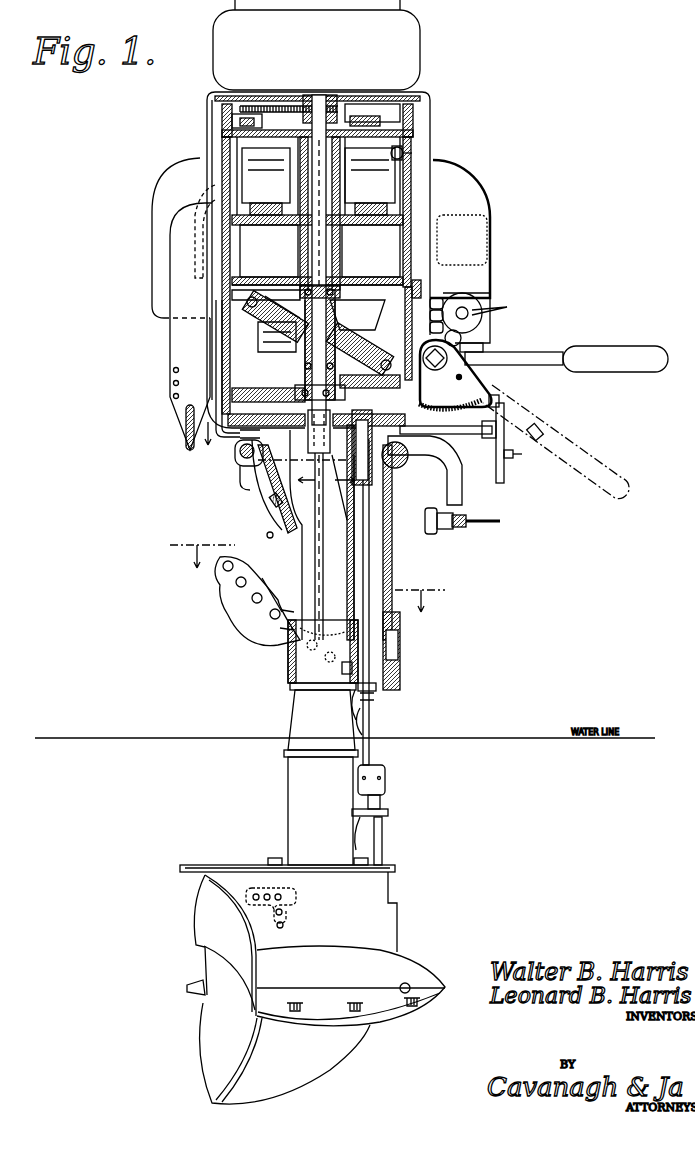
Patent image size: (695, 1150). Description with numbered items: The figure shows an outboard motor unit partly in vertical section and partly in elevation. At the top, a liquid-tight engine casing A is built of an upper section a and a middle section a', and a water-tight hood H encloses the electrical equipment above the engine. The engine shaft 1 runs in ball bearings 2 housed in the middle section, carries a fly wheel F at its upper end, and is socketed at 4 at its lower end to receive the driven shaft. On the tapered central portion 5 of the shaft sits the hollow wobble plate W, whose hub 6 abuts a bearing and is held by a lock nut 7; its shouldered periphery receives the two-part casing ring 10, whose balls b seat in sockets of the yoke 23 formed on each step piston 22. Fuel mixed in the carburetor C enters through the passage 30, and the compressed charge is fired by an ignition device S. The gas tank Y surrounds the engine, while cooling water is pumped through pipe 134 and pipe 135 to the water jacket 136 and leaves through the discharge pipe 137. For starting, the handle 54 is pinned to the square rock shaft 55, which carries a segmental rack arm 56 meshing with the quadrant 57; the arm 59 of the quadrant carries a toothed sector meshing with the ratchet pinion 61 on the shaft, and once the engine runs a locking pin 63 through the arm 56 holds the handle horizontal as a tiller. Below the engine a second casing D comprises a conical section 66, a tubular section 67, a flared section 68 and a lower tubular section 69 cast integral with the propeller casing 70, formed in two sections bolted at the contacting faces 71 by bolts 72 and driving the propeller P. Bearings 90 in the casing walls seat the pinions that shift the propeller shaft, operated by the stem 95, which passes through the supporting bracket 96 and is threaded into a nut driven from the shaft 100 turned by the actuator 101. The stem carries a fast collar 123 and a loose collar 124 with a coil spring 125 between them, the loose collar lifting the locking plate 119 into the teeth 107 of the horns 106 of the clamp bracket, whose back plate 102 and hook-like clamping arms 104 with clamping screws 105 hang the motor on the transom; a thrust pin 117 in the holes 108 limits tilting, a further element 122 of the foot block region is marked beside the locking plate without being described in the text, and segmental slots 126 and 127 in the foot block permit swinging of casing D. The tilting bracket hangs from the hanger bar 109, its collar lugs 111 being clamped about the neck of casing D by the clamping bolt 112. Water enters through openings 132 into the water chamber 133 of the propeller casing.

The water-tight hood H is at (405, 40).
The fly wheel F is at (380, 108).
The ignition device S is at (410, 153).
The water jacket 136 is at (296, 168).
The socket 4 is at (335, 167).
The upper section a is at (378, 181).
The discharge pipe 137 is at (214, 183).
The gas tank Y is at (470, 205).
The engine shaft 1 is at (320, 262).
The engine casing A is at (371, 251).
The middle section a' is at (329, 265).
The carburetor passage 30 is at (422, 290).
The carburetor C is at (472, 302).
The two-part casing ring 10 is at (275, 312).
The wobble plate W is at (282, 300).
The ball bearings 2 is at (335, 292).
The ball b is at (250, 335).
The step piston 22 is at (378, 305).
The locking pin 63 is at (480, 355).
The handle 54 is at (537, 352).
The lock nut 7 is at (514, 449).
The water pipe 135 is at (218, 346).
The yoke 23 is at (295, 342).
The ratchet pinion 61 is at (312, 398).
The quadrant arm 59 is at (375, 400).
The square rock shaft 55 is at (436, 364).
The quadrant 57 is at (481, 397).
The clamping bolt 112 is at (242, 456).
The water pipe 134 is at (292, 470).
The segmental rack arm 56 is at (440, 422).
The shaft 100 is at (495, 432).
The actuator 101 is at (499, 458).
The lugs 111 is at (245, 466).
The second casing D is at (265, 494).
The conical section 66 is at (276, 502).
The hanger bar 109 is at (394, 469).
The hook-like clamping arms 104 is at (462, 493).
The back plate 102 is at (390, 523).
The clamping screws 105 is at (468, 524).
The tapered shaft section 5 is at (307, 561).
The hub 6 is at (359, 452).
The spaced holes 108 is at (262, 578).
The tubular section 67 is at (296, 567).
The stem 95 is at (370, 548).
The horns 106 is at (240, 598).
The notches 107 is at (280, 612).
The segmental slot 127 is at (400, 620).
The housing 122 is at (345, 660).
The thrust pin 117 is at (398, 650).
The locking plate 119 is at (347, 668).
The loose collar 124 is at (340, 690).
The coil spring 125 is at (376, 690).
The segmental slot 126 is at (354, 705).
The fast collar 123 is at (352, 718).
The flared section 68 is at (296, 714).
The lower tubular section 69 is at (288, 803).
The supporting bracket 96 is at (356, 828).
The propeller casing 70 is at (378, 898).
The water chamber 133 is at (292, 898).
The openings 132 is at (283, 912).
The bearings 90 is at (409, 985).
The contacting faces 71 is at (370, 985).
The bolts 72 is at (298, 1013).
The propeller P is at (204, 1033).